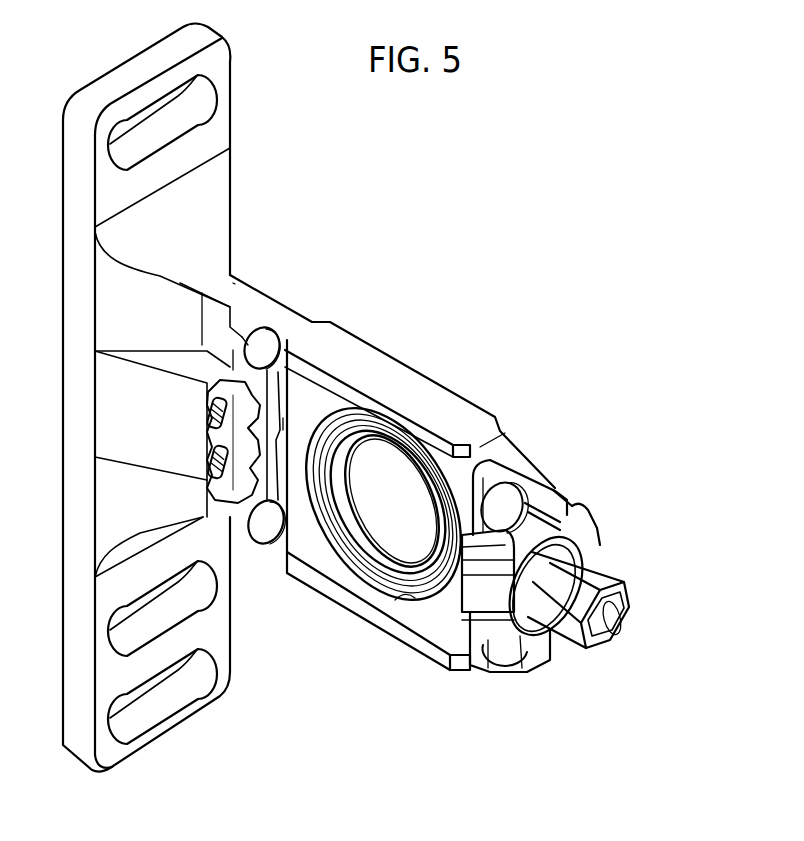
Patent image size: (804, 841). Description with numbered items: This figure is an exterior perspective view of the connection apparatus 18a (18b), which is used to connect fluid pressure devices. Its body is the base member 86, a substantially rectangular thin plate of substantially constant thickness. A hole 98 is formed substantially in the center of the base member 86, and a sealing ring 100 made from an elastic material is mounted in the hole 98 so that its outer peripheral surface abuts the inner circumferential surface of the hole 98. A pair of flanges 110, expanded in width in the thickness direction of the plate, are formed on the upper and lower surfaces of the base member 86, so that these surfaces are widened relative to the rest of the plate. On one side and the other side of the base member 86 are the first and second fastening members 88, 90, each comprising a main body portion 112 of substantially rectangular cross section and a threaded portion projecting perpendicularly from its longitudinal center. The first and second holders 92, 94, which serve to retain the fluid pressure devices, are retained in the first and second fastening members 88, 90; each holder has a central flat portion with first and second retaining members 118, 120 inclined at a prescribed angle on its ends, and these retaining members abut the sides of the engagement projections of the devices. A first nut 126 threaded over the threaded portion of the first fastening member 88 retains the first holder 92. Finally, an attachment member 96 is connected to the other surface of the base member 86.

The connection apparatus 18a is at (385, 297).
The connection apparatus 18b is at (442, 315).
The base member 86 is at (388, 372).
The first fastening member 88 is at (482, 515).
The second fastening member 90 is at (277, 395).
The first holder 92 is at (577, 507).
The second holder 94 is at (215, 433).
The attachment member 96 is at (73, 441).
The hole 98 is at (397, 597).
The sealing ring 100 is at (370, 562).
The flanges 110 is at (457, 405).
The main body portion 112 is at (283, 420).
The first retaining member 118 is at (237, 412).
The second retaining member 120 is at (583, 530).
The first nut 126 is at (593, 565).